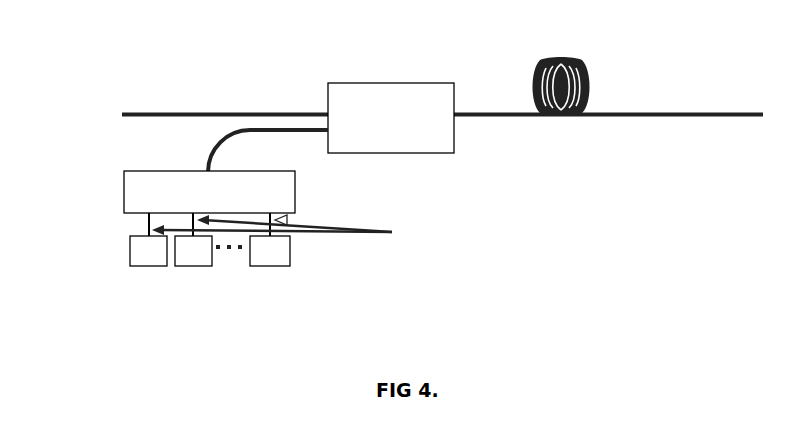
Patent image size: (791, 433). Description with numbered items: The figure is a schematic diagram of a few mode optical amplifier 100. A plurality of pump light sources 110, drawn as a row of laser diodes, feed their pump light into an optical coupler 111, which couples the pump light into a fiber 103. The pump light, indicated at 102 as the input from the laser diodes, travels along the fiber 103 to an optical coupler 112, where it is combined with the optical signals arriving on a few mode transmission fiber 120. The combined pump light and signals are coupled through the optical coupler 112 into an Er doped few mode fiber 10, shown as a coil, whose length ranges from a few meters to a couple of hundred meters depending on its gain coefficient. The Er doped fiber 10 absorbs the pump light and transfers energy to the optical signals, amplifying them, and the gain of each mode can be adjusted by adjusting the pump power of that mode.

The few mode optical amplifier 100 is at (500, 55).
The Er doped few mode fiber 10 is at (588, 70).
The few mode transmission fiber 120 is at (217, 111).
The optical coupler 112 is at (383, 81).
The optical coupler 111 is at (118, 192).
The fiber 103 is at (275, 139).
The pump light signal 102 is at (290, 229).
The pump light sources 110 is at (259, 281).